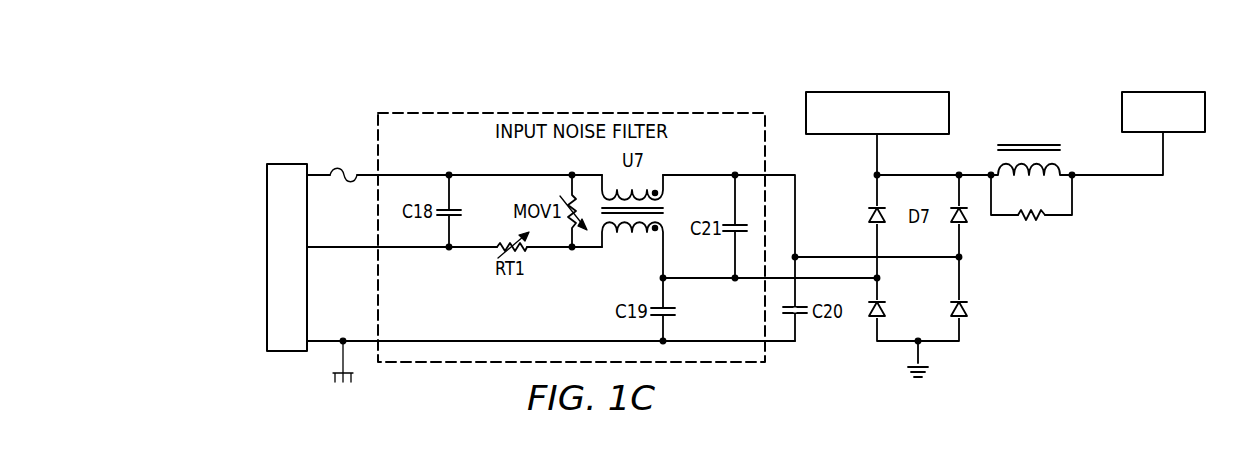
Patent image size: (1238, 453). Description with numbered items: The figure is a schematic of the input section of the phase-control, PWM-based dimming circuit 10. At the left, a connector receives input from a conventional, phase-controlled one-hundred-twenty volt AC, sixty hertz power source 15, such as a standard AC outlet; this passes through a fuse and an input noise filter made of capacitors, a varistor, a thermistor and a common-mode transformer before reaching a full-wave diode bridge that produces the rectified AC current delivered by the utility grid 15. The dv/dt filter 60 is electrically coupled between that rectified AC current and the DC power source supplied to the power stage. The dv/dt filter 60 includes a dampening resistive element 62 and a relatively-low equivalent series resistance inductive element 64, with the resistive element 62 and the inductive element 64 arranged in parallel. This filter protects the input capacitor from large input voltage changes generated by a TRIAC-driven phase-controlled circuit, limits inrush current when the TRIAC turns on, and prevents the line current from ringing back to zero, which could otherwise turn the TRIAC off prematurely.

The dimming circuit 10 is at (197, 153).
The power source 15 is at (886, 92).
The dv/dt filter 60 is at (1145, 212).
The dampening resistive element 62 is at (1038, 222).
The inductive element 64 is at (1065, 167).